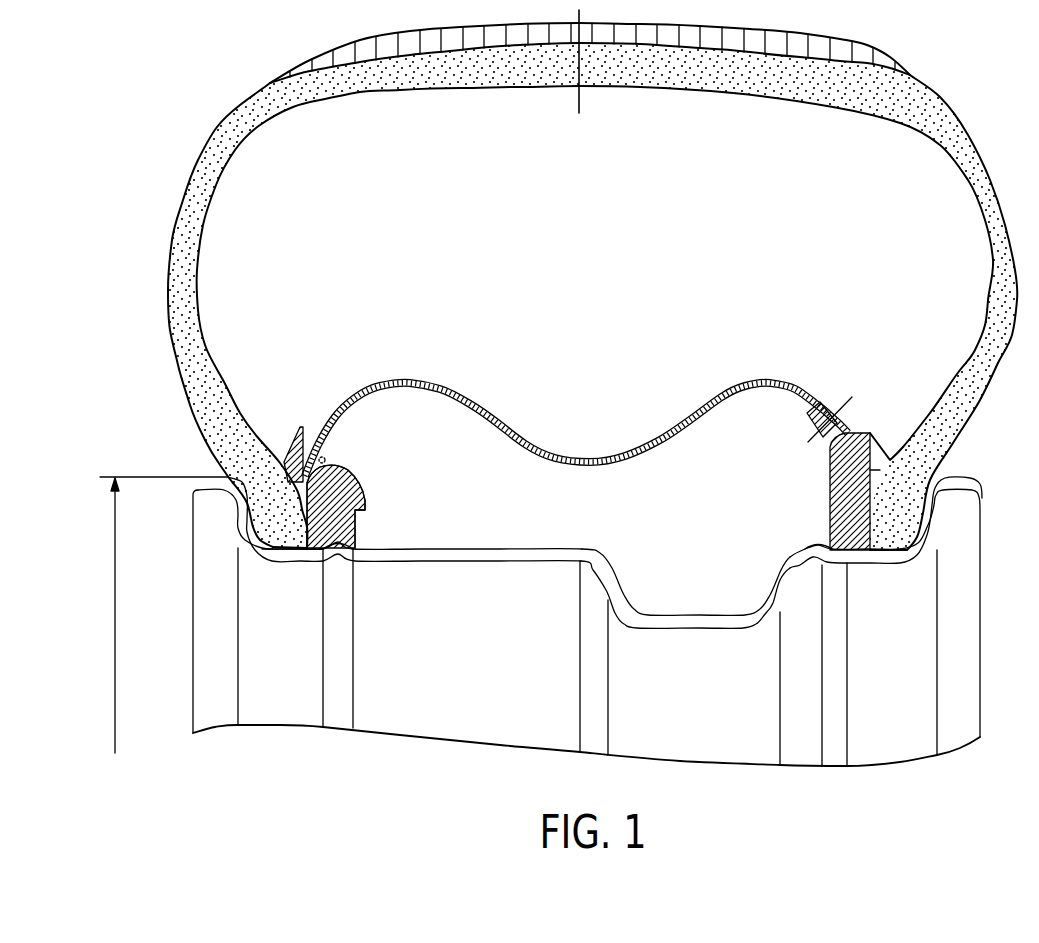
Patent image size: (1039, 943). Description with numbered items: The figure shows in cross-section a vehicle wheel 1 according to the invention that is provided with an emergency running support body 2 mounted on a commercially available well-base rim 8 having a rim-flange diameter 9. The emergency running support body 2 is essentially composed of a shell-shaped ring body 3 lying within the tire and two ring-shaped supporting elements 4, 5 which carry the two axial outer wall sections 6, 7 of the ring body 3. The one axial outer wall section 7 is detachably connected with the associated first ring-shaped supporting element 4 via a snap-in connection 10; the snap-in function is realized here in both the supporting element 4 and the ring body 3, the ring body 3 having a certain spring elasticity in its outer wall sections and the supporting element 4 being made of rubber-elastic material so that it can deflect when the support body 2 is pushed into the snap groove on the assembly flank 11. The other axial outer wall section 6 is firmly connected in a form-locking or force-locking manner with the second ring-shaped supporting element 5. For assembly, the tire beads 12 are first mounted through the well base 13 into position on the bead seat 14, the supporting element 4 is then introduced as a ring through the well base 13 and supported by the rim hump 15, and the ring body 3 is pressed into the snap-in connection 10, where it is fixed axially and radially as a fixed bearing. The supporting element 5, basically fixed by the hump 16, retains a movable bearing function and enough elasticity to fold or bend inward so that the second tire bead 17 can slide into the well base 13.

The vehicle wheel 1 is at (978, 98).
The emergency running support body 2 is at (591, 418).
The shell-shaped ring body 3 is at (740, 380).
The first ring-shaped supporting element 4 is at (345, 523).
The second ring-shaped supporting element 5 is at (838, 478).
The axial outer wall section 6 is at (857, 412).
The axial outer wall section 7 is at (320, 408).
The well-base rim 8 is at (541, 639).
The rim-flange diameter 9 is at (115, 710).
The snap-in connection 10 is at (322, 458).
The assembly flank 11 is at (363, 480).
The tire bead 12 is at (275, 549).
The well base 13 is at (697, 587).
The bead seat 14 is at (305, 575).
The rim hump 15 is at (340, 553).
The hump 16 is at (823, 552).
The second tire bead 17 is at (890, 556).